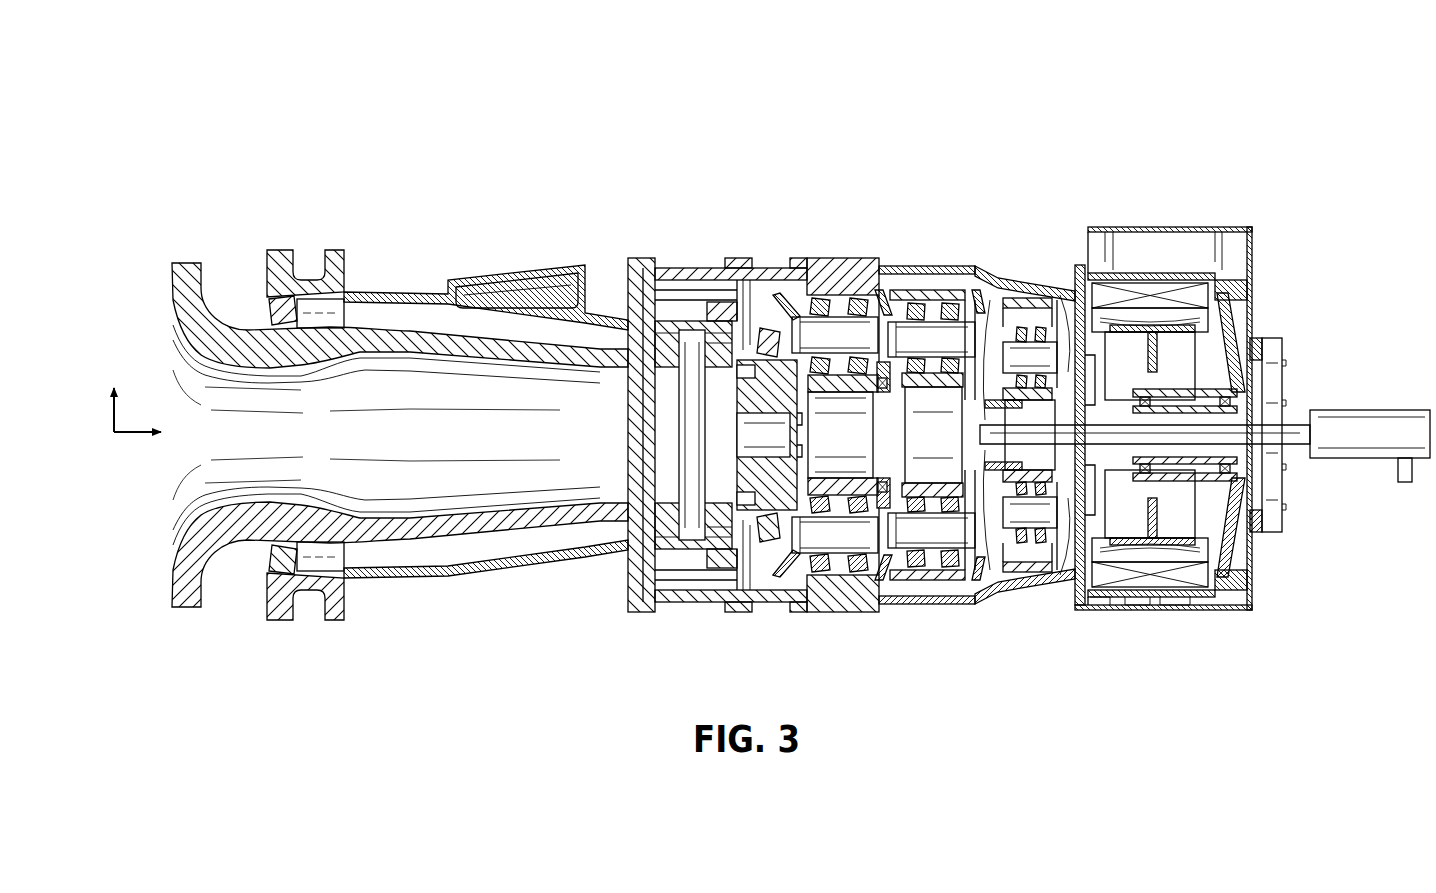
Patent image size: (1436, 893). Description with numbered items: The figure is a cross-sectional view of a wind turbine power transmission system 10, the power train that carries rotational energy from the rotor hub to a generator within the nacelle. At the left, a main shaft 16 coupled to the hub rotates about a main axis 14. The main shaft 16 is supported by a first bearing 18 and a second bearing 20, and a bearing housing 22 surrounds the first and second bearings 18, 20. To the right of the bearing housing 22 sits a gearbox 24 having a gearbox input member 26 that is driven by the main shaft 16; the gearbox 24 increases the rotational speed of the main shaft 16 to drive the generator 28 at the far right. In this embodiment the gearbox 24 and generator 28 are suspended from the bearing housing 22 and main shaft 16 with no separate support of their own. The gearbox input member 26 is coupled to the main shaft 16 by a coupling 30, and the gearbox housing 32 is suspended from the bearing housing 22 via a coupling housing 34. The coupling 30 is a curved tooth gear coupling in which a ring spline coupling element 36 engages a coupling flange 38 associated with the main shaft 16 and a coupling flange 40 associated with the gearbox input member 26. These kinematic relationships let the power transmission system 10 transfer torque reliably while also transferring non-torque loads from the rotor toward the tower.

The power transmission system 10 is at (866, 90).
The main axis 14 is at (131, 439).
The main shaft 16 is at (190, 260).
The first bearing 18 is at (278, 314).
The second bearing 20 is at (621, 322).
The bearing housing 22 is at (394, 290).
The gearbox 24 is at (830, 256).
The gearbox input member 26 is at (749, 340).
The generator 28 is at (1162, 224).
The coupling 30 is at (690, 552).
The gearbox housing 32 is at (920, 268).
The coupling housing 34 is at (684, 268).
The ring spline coupling element 36 is at (668, 553).
The coupling flange 38 is at (666, 340).
The coupling flange 40 is at (722, 532).